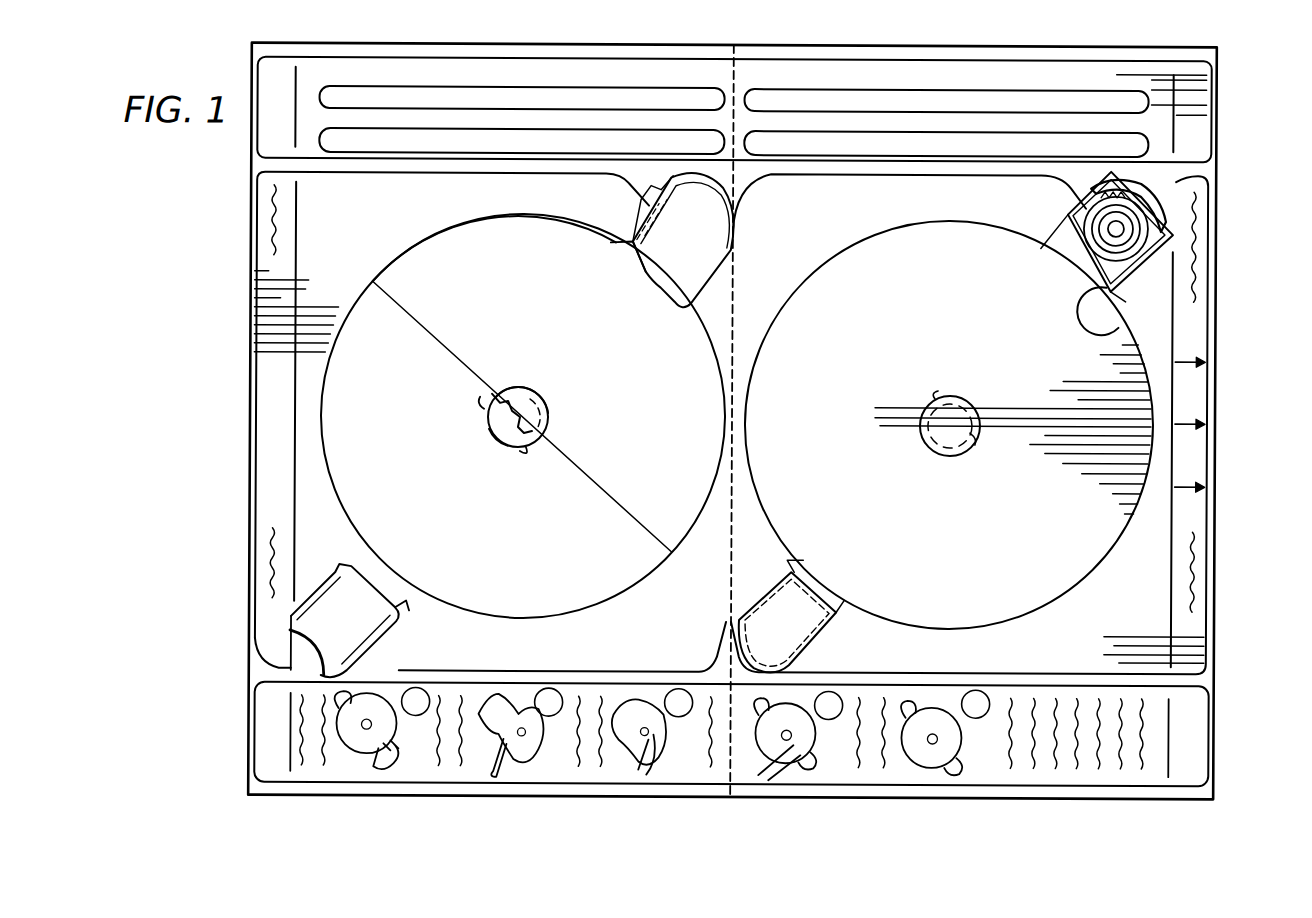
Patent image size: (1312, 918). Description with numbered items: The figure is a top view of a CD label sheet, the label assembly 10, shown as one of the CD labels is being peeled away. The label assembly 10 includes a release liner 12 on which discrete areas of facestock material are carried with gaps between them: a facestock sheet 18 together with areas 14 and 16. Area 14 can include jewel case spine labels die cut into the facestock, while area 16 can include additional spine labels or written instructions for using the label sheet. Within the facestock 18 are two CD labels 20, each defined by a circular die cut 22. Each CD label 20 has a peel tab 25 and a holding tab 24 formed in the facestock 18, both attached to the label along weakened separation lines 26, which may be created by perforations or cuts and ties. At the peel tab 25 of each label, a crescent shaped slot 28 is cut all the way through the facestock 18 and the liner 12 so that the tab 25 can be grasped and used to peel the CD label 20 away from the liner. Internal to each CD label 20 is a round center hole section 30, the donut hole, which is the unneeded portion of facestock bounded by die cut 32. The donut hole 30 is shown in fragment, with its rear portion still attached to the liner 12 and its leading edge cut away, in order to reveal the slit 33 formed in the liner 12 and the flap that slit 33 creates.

The label assembly 10 is at (215, 295).
The release liner 12 is at (1173, 176).
The facestock area 14 is at (1155, 108).
The facestock area 16 is at (1130, 750).
The facestock sheet 18 is at (1148, 588).
The CD label 20 is at (660, 461).
The circular die cut 22 is at (458, 225).
The holding tab 24 is at (642, 213).
The peel tab 25 is at (690, 252).
The weakened separation line 26 is at (1118, 322).
The crescent shaped slot 28 is at (1160, 215).
The center hole section 30 is at (502, 405).
The die cut 32 is at (520, 396).
The slit 33 is at (490, 440).